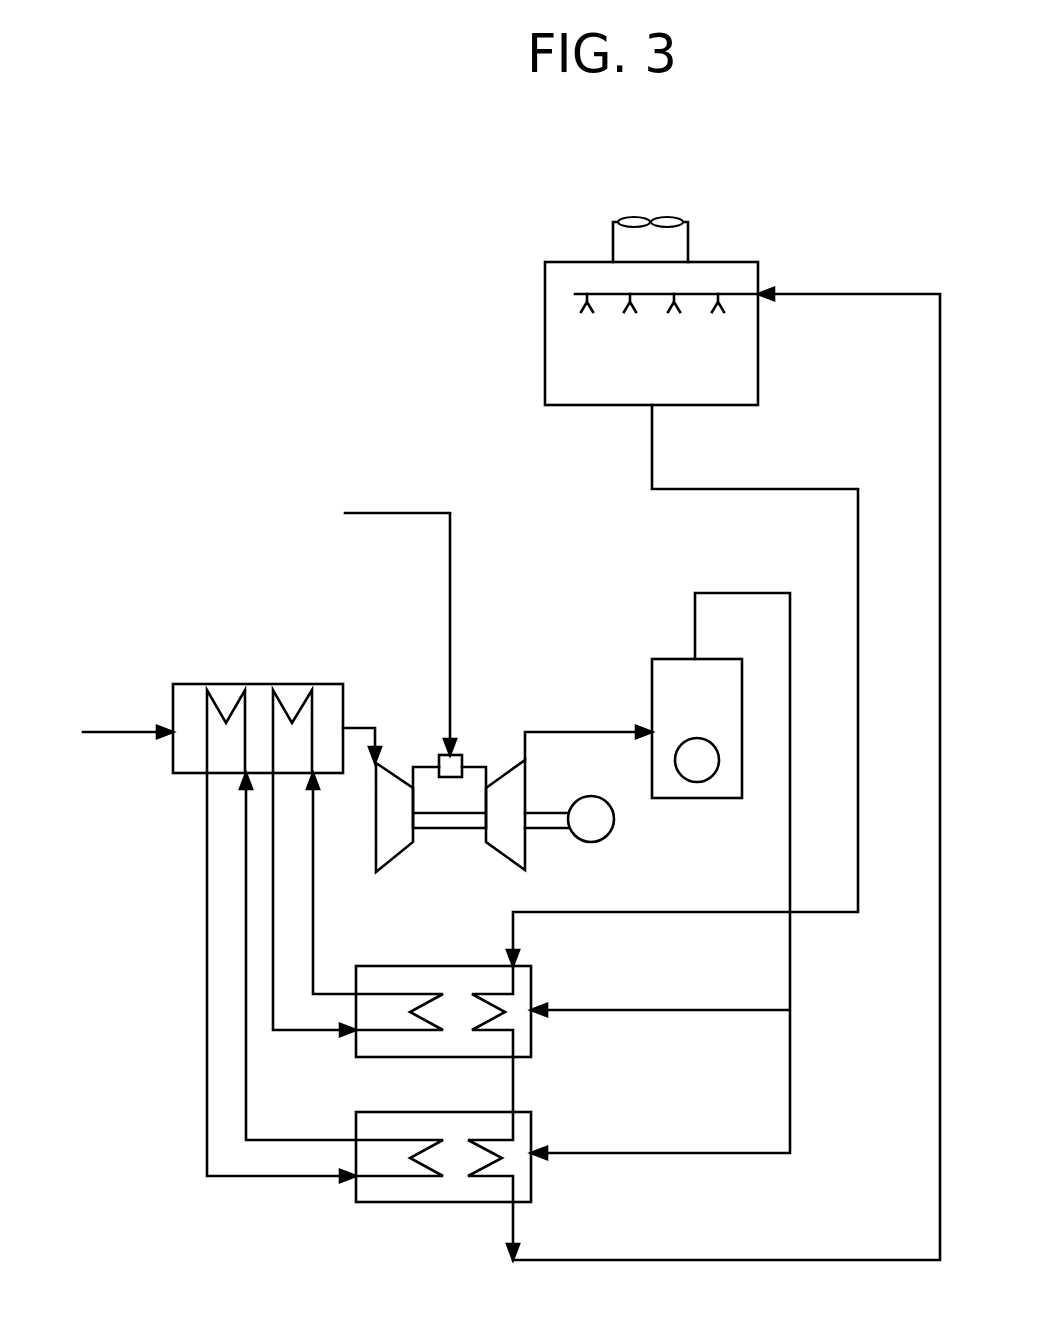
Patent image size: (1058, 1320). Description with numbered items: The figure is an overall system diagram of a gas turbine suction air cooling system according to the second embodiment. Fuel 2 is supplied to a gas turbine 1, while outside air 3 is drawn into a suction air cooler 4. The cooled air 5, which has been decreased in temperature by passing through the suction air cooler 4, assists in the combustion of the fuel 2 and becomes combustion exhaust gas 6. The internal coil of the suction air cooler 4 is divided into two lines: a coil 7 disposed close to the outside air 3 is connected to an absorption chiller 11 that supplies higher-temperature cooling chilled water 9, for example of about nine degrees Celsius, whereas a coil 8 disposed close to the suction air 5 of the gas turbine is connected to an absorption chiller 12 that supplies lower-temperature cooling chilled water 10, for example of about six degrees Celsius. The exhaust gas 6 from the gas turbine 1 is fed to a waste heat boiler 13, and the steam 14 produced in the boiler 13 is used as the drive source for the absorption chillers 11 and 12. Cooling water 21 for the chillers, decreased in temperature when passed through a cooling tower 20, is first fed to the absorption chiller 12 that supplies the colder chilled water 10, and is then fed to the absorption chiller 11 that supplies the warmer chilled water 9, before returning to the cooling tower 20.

The gas turbine 1 is at (402, 850).
The fuel 2 is at (450, 640).
The outside air 3 is at (110, 732).
The suction air cooler 4 is at (264, 684).
The cooled air 5 is at (374, 728).
The combustion exhaust gas 6 is at (578, 732).
The coil 7 is at (222, 700).
The coil 8 is at (300, 700).
The higher-temperature cooling chilled water 9 is at (248, 1092).
The lower-temperature cooling chilled water 10 is at (313, 955).
The absorption chiller 11 is at (415, 1202).
The absorption chiller 12 is at (533, 975).
The waste heat boiler 13 is at (706, 798).
The steam 14 is at (790, 960).
The cooling tower 20 is at (740, 262).
The cooling water 21 is at (637, 912).